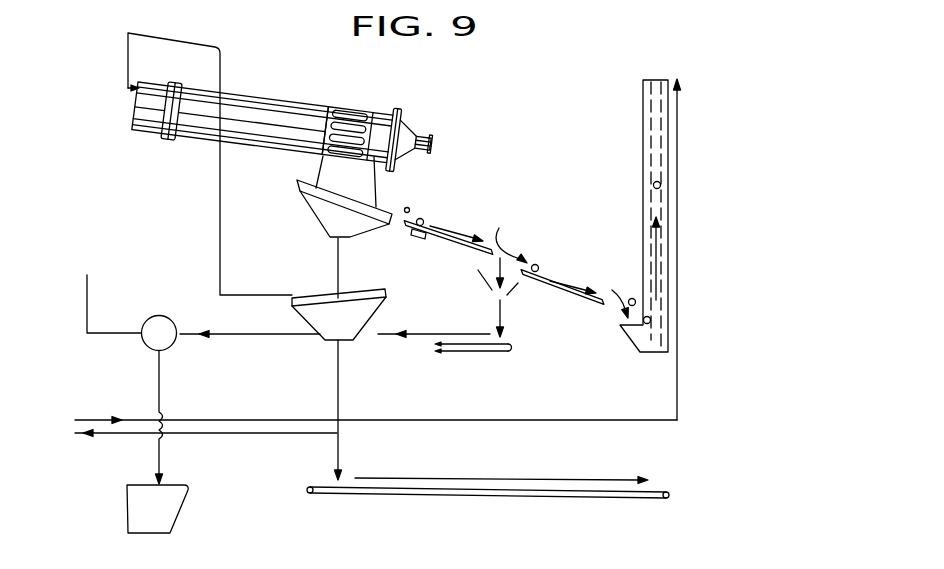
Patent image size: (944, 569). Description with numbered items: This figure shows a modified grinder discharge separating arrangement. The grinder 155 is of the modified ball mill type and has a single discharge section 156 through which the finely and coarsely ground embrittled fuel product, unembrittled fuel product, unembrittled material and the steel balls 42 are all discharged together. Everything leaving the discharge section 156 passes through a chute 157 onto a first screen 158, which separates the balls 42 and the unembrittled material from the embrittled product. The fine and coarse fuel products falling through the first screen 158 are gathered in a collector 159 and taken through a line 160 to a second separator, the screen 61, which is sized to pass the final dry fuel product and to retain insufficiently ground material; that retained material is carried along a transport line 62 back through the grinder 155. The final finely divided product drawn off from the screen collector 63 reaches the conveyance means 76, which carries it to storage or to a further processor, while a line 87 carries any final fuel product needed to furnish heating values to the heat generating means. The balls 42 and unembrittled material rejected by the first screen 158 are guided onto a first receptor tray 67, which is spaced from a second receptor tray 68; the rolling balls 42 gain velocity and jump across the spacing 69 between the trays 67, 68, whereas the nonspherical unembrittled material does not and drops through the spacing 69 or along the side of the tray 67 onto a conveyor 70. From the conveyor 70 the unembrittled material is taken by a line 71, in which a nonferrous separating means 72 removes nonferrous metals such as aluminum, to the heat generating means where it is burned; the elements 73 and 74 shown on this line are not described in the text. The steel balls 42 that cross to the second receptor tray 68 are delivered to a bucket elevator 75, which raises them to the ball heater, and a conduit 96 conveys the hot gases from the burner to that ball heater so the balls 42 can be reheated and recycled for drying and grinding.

The transport line 62 is at (222, 61).
The grinder 155 is at (297, 79).
The discharge section 156 is at (375, 95).
The chute 157 is at (330, 167).
The first screen 158 is at (297, 186).
The collector 159 is at (325, 217).
The line 160 is at (338, 276).
The balls 42 is at (416, 201).
The screen 61 is at (392, 288).
The screen collector 63 is at (360, 315).
The first receptor tray 67 is at (445, 243).
The spacing 69 is at (516, 234).
The second receptor tray 68 is at (560, 290).
The bucket elevator 75 is at (650, 143).
The conduit 96 is at (678, 255).
The conveyor 70 is at (468, 355).
The line 71 is at (87, 301).
The nonferrous separating means 72 is at (168, 298).
The outlet line 73 is at (159, 388).
The line 87 is at (239, 437).
The collection bin 74 is at (172, 513).
The conveyance means 76 is at (502, 498).